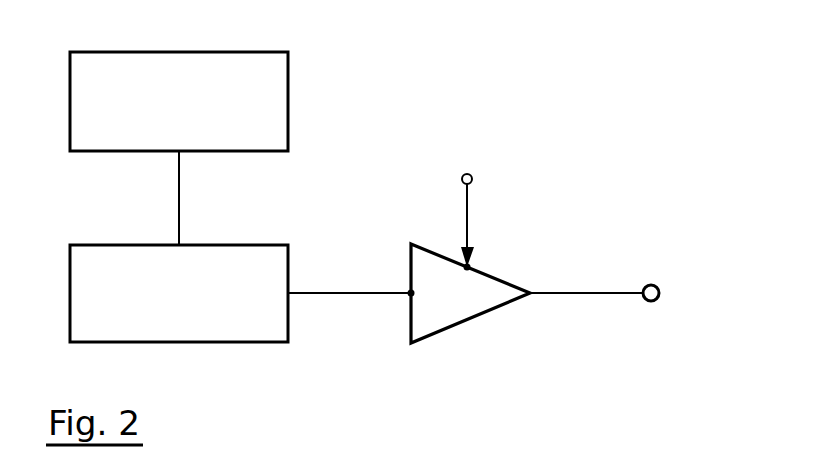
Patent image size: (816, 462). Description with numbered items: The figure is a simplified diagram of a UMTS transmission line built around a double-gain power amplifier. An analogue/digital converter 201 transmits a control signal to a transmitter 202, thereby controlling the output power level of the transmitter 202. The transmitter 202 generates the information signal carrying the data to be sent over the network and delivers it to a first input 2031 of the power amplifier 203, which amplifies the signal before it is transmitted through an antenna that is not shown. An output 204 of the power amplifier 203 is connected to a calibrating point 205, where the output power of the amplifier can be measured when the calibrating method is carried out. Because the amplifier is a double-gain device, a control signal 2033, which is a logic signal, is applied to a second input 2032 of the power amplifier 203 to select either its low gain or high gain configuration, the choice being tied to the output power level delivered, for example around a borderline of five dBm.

The analogue/digital converter 201 is at (288, 98).
The transmitter 202 is at (253, 245).
The power amplifier 203 is at (452, 327).
The first input 2031 is at (411, 295).
The second input 2032 is at (467, 266).
The control signal 2033 is at (467, 174).
The output 204 is at (578, 293).
The calibrating point 205 is at (651, 301).